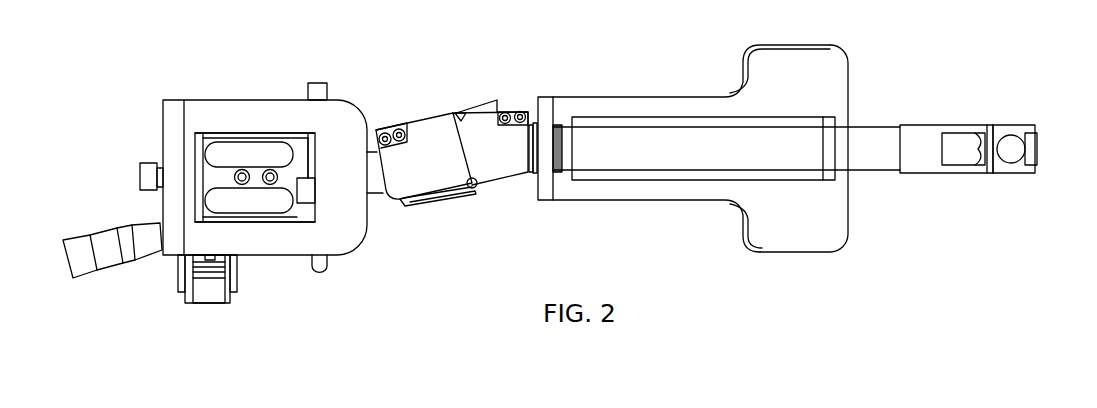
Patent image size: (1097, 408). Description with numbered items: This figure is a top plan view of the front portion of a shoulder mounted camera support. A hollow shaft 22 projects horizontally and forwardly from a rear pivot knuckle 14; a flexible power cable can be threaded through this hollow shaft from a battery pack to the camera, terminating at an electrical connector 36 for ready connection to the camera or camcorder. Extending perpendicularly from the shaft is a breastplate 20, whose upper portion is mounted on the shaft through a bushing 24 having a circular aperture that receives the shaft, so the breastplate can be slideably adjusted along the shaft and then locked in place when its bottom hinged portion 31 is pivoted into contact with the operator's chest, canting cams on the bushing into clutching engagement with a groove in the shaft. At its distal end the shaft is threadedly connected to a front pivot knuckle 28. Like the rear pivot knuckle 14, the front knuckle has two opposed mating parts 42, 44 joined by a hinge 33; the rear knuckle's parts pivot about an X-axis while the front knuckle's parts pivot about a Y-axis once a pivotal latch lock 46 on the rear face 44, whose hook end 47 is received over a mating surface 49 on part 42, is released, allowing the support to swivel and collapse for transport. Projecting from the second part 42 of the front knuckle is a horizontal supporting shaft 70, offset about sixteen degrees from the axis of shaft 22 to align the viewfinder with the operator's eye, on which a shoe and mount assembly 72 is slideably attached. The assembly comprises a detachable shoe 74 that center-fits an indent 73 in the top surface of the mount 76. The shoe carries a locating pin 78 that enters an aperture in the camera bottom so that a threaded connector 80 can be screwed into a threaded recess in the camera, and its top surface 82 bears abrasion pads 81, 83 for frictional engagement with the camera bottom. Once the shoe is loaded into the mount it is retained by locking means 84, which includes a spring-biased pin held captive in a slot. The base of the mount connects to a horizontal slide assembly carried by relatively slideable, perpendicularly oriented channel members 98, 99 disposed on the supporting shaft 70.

The rear pivot knuckle 14 is at (970, 167).
The breastplate 20 is at (811, 254).
The hollow shaft 22 is at (872, 171).
The bushing 24 is at (543, 192).
The front pivot knuckle 28 is at (416, 209).
The bottom hinged portion 31 is at (760, 210).
The hinge 33 is at (460, 112).
The electrical connector 36 is at (97, 233).
The second part of pivot knuckle 42 is at (422, 123).
The rear face part of pivot knuckle 44 is at (488, 172).
The pivotal latch lock 46 is at (490, 100).
The hook end 47 is at (1040, 148).
The mating surface 49 is at (978, 142).
The horizontal supporting shaft 70 is at (375, 186).
The shoe and mount assembly 72 is at (192, 96).
The indent 73 is at (267, 105).
The shoe 74 is at (298, 147).
The mount 76 is at (347, 228).
The locating pin 78 is at (262, 184).
The threaded connector 80 is at (243, 170).
The abrasion pad 81 is at (210, 155).
The top surface of the shoe 82 is at (318, 167).
The abrasion pad 83 is at (213, 203).
The locking means 84 is at (317, 155).
The channel member 98 is at (203, 296).
The channel member 99 is at (175, 276).